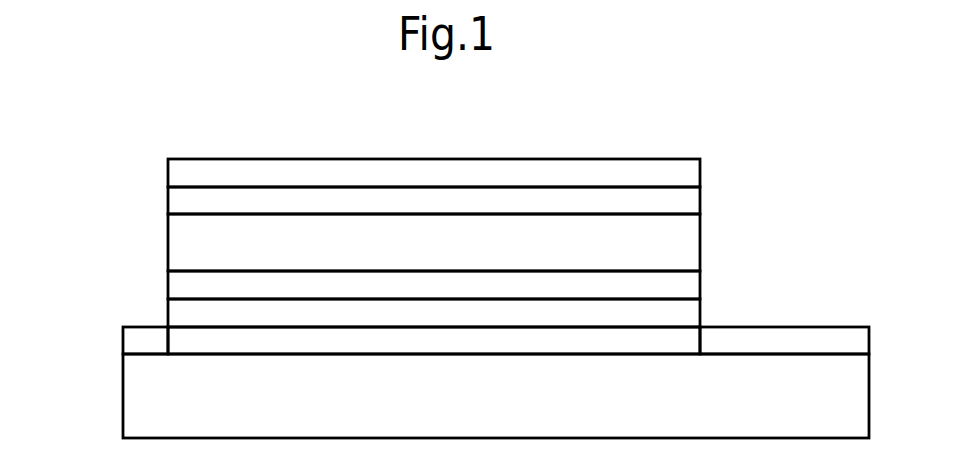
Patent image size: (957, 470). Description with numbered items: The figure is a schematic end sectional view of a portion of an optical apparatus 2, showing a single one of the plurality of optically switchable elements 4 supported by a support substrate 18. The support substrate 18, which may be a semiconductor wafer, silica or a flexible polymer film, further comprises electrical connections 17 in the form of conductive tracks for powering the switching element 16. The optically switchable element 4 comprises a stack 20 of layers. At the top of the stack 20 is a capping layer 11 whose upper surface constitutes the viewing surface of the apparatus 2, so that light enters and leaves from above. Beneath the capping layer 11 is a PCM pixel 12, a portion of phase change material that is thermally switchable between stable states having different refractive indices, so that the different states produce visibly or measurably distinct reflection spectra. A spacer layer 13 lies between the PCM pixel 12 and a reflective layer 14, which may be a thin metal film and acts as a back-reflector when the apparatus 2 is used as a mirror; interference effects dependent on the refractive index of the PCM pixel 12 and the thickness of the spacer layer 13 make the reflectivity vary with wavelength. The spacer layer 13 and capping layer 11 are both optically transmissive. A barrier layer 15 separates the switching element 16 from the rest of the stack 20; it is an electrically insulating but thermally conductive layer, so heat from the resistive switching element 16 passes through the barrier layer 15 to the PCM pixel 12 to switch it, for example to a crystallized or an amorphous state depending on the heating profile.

The optical apparatus 2 is at (803, 96).
The optically switchable element 4 is at (641, 96).
The capping layer 11 is at (202, 172).
The PCM pixel 12 is at (265, 202).
The spacer layer 13 is at (326, 250).
The reflective layer 14 is at (402, 283).
The barrier layer 15 is at (478, 313).
The switching element 16 is at (561, 343).
The electrical connections 17 is at (139, 345).
The support substrate 18 is at (462, 406).
The stack 20 is at (377, 226).